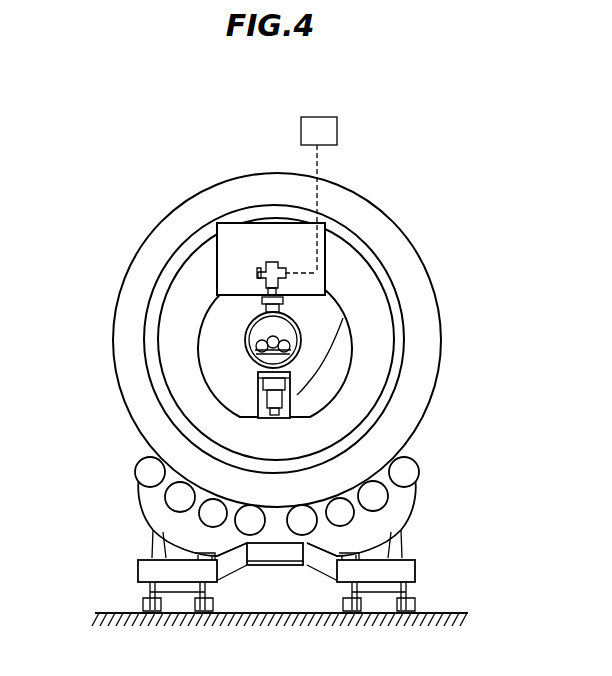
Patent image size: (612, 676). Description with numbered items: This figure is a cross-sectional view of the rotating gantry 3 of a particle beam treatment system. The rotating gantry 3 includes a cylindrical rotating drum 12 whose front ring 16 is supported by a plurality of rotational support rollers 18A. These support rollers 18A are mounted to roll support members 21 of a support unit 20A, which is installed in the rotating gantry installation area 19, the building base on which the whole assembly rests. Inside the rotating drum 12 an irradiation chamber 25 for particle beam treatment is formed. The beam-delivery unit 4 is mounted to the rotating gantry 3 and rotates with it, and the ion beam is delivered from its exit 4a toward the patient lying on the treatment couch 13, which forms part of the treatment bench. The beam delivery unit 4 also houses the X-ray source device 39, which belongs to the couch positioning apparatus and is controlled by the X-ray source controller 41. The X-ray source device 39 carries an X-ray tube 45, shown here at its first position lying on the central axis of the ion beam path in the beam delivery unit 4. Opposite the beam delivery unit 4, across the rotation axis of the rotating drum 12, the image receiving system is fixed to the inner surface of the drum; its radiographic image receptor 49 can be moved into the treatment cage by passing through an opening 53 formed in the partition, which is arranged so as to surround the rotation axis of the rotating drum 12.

The rotating gantry 3 is at (163, 214).
The front ring 16 is at (141, 254).
The rotating drum 12 is at (441, 344).
The irradiation chamber 25 is at (217, 357).
The beam-delivery unit 4 is at (216, 224).
The exit 4a is at (262, 300).
The X-ray source device 39 is at (272, 259).
The X-ray tube 45 is at (260, 271).
The X-ray source controller 41 is at (318, 117).
The treatment couch 13 is at (247, 336).
The opening 53 is at (343, 318).
The image receptor 49 is at (303, 413).
The support rollers 18A is at (419, 461).
The roll support members 21 is at (157, 512).
The support unit 20A is at (415, 567).
The rotating gantry installation area 19 is at (243, 611).